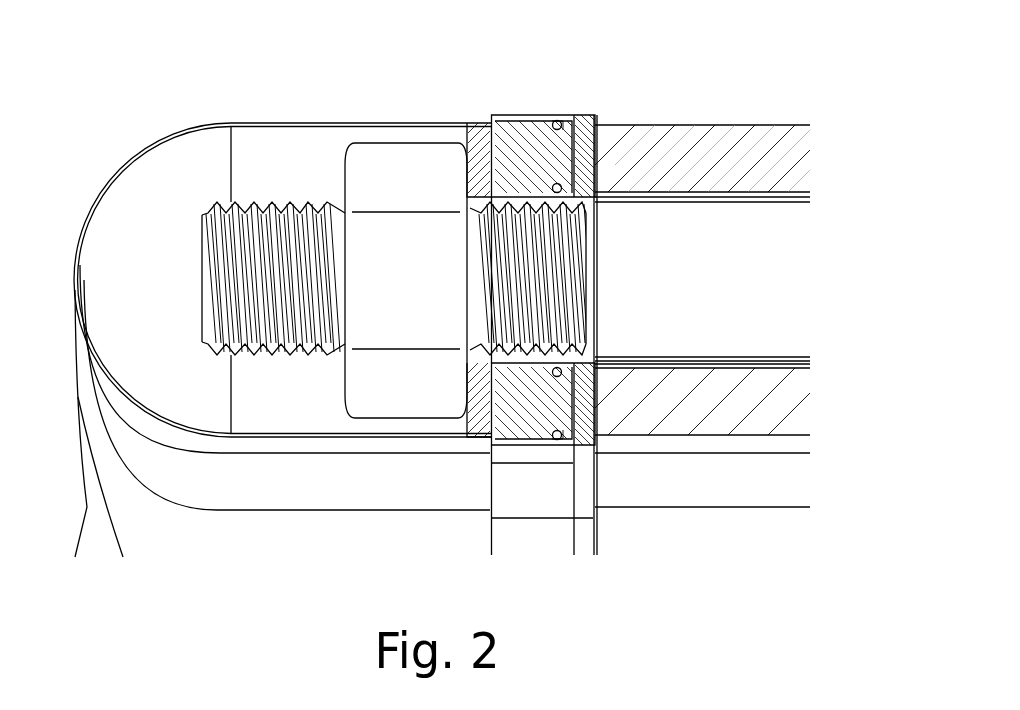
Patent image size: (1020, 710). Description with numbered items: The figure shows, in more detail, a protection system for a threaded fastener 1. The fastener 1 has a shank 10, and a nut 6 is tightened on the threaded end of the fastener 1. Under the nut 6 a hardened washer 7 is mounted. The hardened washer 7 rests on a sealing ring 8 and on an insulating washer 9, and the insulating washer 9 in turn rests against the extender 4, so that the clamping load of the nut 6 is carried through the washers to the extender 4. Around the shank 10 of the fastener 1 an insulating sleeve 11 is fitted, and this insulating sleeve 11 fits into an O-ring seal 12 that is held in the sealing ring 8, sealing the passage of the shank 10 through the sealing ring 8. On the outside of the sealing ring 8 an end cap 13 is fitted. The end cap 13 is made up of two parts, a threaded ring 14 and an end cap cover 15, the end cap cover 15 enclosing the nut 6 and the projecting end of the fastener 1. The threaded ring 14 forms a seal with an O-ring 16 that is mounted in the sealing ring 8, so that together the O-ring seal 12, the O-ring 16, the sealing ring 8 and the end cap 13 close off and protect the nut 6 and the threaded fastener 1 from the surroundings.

The fastener 1 is at (228, 208).
The extender 4 is at (675, 210).
The nut 6 is at (410, 227).
The hardened washer 7 is at (484, 161).
The sealing ring 8 is at (510, 171).
The insulating washer 9 is at (566, 172).
The shank 10 is at (742, 196).
The insulating sleeve 11 is at (762, 190).
The O-ring seal 12 is at (667, 147).
The end cap 13 is at (265, 121).
The threaded ring 14 is at (507, 115).
The end cap cover 15 is at (108, 183).
The O-ring 16 is at (557, 121).